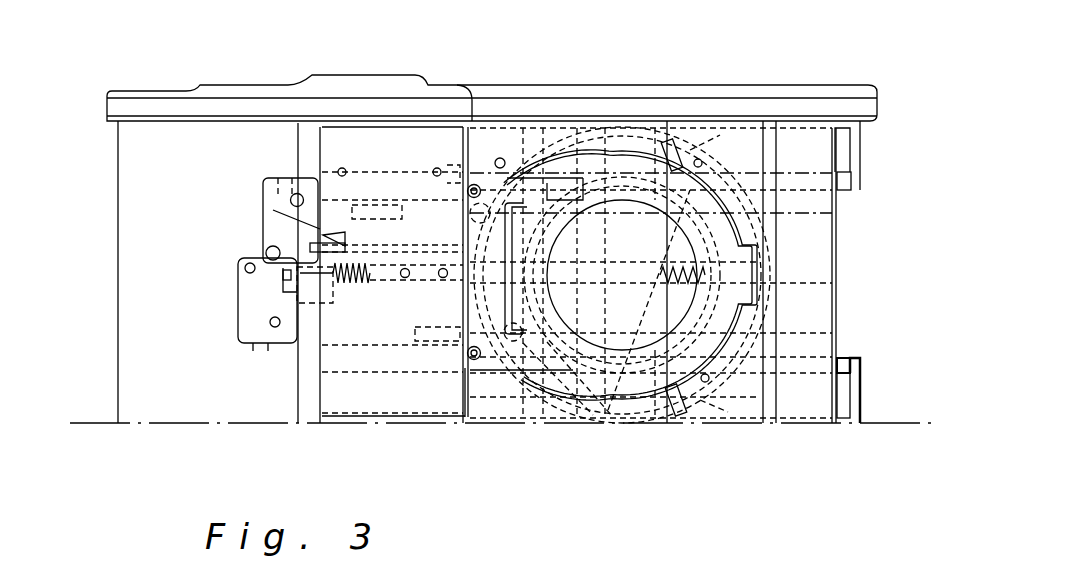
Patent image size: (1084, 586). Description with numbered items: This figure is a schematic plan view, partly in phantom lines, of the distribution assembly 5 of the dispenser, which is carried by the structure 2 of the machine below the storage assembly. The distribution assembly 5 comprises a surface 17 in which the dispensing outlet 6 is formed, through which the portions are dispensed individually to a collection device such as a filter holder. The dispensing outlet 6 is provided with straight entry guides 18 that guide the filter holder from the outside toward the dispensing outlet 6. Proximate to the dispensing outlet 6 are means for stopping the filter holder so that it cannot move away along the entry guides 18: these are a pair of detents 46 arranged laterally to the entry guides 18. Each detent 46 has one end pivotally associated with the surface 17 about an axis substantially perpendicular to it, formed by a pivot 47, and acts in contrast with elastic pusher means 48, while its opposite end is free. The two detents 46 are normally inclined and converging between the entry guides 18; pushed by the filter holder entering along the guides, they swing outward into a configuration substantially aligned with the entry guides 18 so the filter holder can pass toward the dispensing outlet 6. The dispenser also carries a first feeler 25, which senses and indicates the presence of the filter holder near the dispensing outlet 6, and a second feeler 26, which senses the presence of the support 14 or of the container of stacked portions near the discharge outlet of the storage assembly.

The structure 2 is at (106, 90).
The distribution assembly 5 is at (784, 389).
The dispensing outlet 6 is at (580, 313).
The support 14 is at (540, 360).
The surface 17 is at (854, 161).
The entry guides 18 is at (803, 190).
The first feeler 25 is at (310, 277).
The second feeler 26 is at (262, 215).
The detents 46 is at (698, 163).
The pivot 47 is at (707, 167).
The elastic pusher means 48 is at (658, 150).